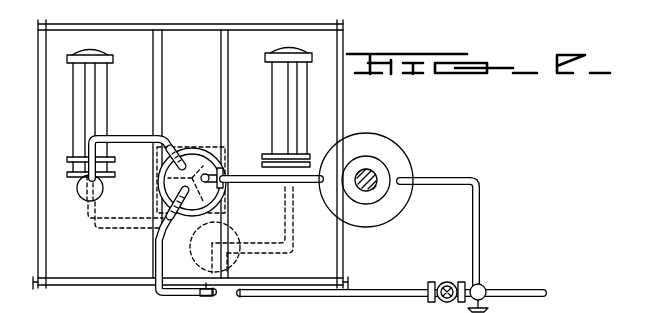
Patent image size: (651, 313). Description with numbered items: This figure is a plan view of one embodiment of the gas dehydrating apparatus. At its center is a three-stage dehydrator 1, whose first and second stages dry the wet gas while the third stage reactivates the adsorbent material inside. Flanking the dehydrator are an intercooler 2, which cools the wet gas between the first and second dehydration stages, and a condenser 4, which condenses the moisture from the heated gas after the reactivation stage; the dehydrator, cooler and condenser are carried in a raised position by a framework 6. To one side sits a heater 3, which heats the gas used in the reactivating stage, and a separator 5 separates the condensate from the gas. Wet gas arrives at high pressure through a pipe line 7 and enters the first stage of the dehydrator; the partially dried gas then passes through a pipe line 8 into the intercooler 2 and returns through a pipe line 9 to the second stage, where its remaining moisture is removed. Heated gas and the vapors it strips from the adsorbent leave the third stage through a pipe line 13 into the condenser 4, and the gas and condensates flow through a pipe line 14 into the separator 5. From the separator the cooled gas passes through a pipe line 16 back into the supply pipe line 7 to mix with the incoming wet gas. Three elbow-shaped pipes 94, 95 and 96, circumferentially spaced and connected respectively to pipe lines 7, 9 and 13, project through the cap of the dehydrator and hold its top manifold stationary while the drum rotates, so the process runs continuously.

The three-stage dehydrator 1 is at (222, 208).
The intercooler 2 is at (108, 80).
The heater 3 is at (395, 148).
The condenser 4 is at (272, 89).
The separator 5 is at (243, 262).
The framework 6 is at (40, 118).
The supply pipe line 7 is at (157, 262).
The pipe line 8 is at (119, 223).
The pipe line 9 is at (117, 136).
The pipe line 13 is at (256, 178).
The pipe line 14 is at (297, 236).
The pipe line 16 is at (205, 270).
The elbow-shaped pipe 94 is at (168, 187).
The elbow-shaped pipe 95 is at (191, 148).
The elbow-shaped pipe 96 is at (221, 166).